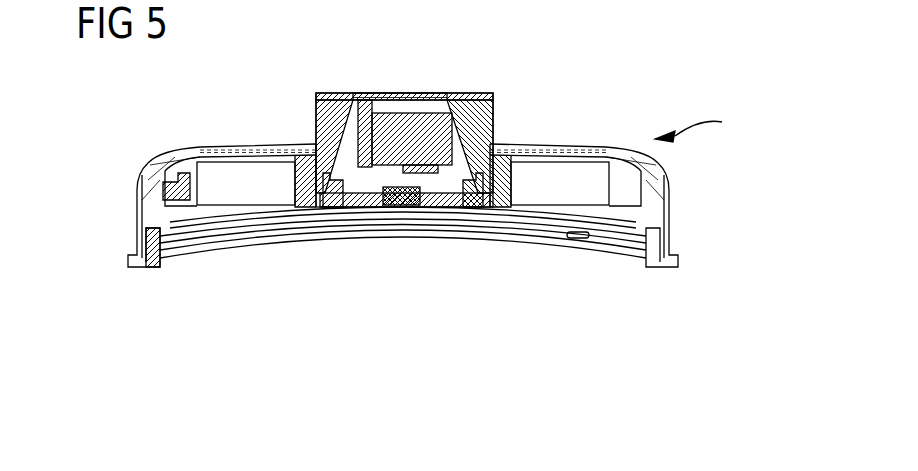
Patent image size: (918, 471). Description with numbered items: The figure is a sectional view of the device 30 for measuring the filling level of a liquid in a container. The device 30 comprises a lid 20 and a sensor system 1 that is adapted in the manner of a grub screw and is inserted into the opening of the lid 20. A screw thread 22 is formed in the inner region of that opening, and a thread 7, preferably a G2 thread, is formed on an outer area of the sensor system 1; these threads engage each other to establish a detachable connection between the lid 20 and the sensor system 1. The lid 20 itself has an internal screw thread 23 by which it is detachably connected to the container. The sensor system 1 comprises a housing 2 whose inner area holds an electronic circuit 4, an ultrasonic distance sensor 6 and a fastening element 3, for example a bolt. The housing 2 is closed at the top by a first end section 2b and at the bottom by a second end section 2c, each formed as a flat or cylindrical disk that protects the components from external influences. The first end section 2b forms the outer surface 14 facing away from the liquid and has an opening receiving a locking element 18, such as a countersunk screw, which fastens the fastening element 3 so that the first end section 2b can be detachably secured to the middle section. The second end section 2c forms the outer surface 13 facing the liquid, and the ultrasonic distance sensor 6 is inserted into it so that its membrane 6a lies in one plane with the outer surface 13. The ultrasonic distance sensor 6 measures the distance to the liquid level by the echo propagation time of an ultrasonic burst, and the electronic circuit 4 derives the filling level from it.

The sensor system 1 is at (497, 127).
The housing 2 is at (322, 93).
The first end section 2b is at (420, 93).
The second end section 2c is at (360, 202).
The fastening element 3 is at (495, 105).
The electronic circuit 4 is at (340, 200).
The ultrasonic distance sensor 6 is at (422, 204).
The membrane 6a is at (410, 204).
The thread 7 is at (500, 216).
The outer surface 13 is at (375, 206).
The outer surface 14 is at (460, 93).
The locking element 18 is at (362, 100).
The lid 20 is at (140, 197).
The screw thread 22 is at (316, 150).
The screw thread 23 is at (160, 255).
The device 30 is at (699, 124).